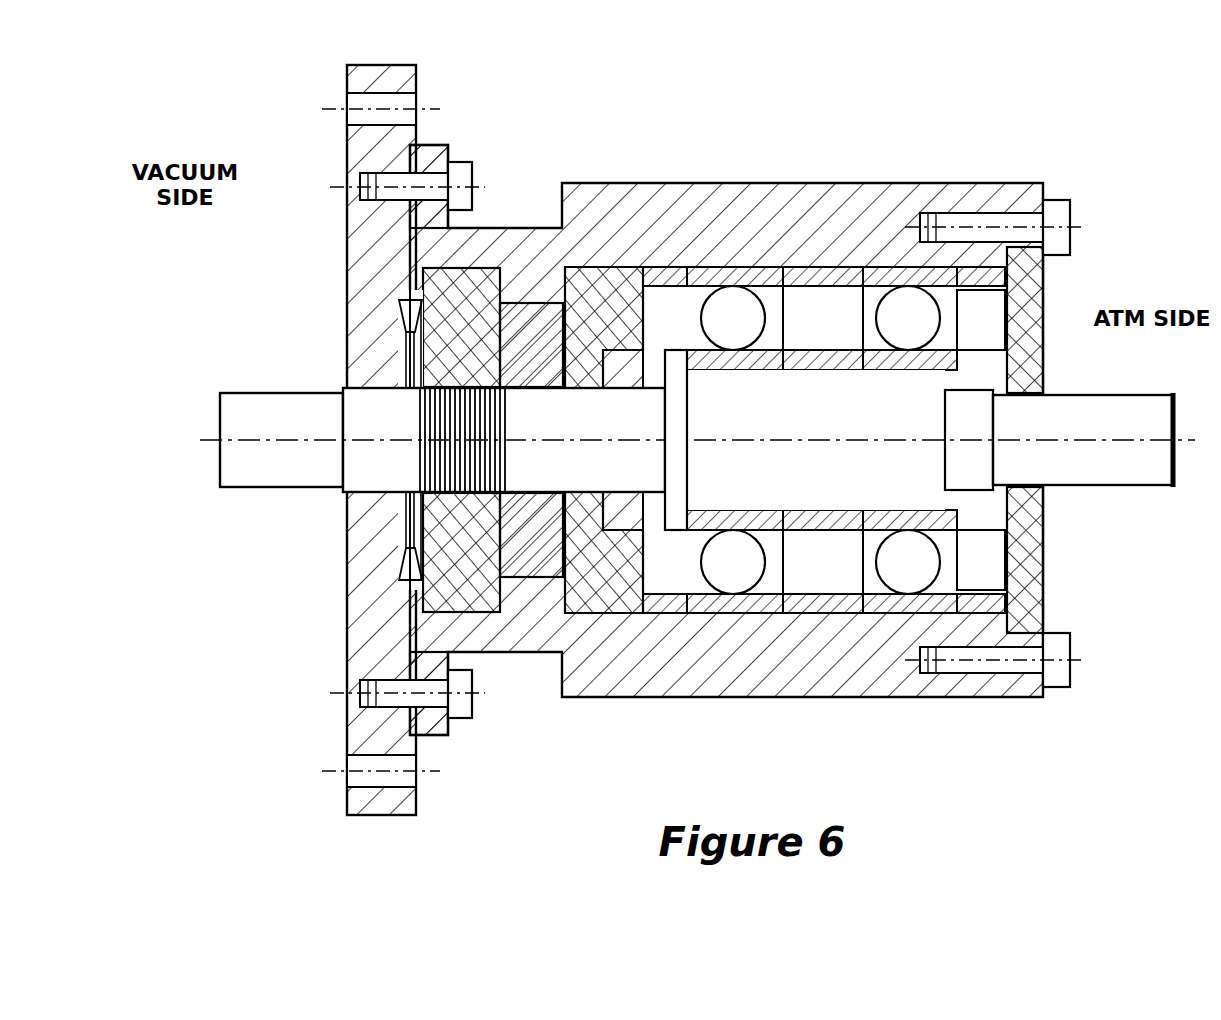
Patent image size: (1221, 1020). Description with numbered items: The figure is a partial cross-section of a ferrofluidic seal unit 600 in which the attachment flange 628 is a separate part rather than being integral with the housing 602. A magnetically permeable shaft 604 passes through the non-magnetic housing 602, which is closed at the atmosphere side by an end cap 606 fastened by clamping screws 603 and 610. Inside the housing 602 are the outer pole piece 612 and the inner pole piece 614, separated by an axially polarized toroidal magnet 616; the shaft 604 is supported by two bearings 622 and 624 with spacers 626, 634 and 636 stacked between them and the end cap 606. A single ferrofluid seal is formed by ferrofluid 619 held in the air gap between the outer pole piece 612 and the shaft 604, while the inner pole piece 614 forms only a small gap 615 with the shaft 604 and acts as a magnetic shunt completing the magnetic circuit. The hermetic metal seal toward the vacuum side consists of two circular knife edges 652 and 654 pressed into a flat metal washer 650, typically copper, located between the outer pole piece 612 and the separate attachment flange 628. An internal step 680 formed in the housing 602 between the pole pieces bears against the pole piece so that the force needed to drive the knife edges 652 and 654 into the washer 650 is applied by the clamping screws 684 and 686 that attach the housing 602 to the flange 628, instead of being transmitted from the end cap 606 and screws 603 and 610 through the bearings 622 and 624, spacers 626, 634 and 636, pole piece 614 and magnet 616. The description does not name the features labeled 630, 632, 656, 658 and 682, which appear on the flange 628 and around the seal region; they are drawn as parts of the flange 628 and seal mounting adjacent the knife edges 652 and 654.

The ferrofluidic seal unit 600 is at (1038, 117).
The housing 602 is at (785, 670).
The clamping screw 603 is at (1070, 224).
The shaft 604 is at (1110, 468).
The end cap 606 is at (1032, 542).
The clamping screw 610 is at (1068, 643).
The outer pole piece 612 is at (380, 254).
The inner pole piece 614 is at (616, 295).
The gap 615 is at (610, 391).
The magnet 616 is at (528, 565).
The ferrofluid 619 is at (478, 416).
The bearing 622 is at (757, 270).
The bearing 624 is at (888, 275).
The spacer 626 is at (670, 603).
The attachment flange 628 is at (413, 800).
The mounting flange 630 is at (363, 118).
The flange bolt hole 632 is at (348, 782).
The spacer 634 is at (847, 607).
The spacer 636 is at (980, 613).
The flat washer 650 is at (400, 333).
The knife edge 652 is at (400, 555).
The knife edge 654 is at (433, 593).
The lower seal holder 656 is at (403, 597).
The upper seal holder 658 is at (440, 281).
The internal step 680 is at (553, 602).
The flange bolt hole 682 is at (367, 80).
The clamping screw 684 is at (465, 170).
The clamping screw 686 is at (352, 685).